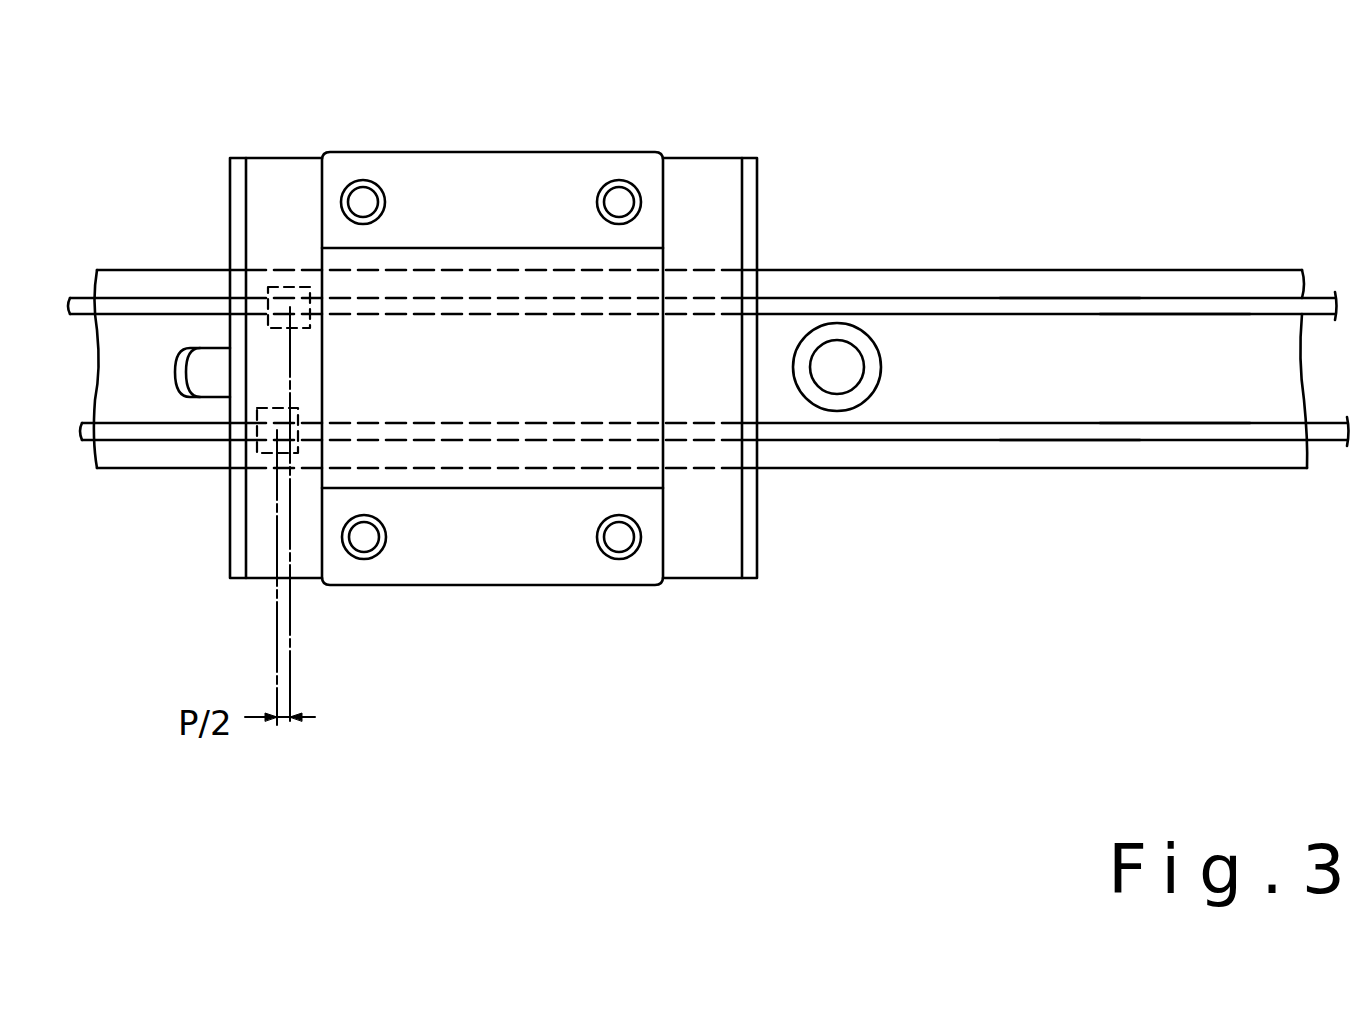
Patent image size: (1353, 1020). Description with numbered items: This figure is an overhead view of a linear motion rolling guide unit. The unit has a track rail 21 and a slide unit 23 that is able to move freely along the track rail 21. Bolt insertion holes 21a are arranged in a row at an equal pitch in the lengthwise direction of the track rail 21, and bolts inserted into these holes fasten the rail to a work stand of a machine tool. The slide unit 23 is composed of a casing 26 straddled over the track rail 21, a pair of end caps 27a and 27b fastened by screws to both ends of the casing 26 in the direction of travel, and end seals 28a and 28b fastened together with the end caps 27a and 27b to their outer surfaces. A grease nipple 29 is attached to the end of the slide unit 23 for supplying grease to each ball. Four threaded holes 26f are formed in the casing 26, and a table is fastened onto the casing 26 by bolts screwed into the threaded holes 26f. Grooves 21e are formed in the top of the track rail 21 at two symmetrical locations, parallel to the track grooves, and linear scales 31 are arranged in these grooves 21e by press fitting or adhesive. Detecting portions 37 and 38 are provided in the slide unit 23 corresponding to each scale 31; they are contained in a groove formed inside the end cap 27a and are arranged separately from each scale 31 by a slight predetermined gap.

The track rail 21 is at (1265, 258).
The bolt insertion holes 21a is at (878, 370).
The grooves 21e is at (1078, 302).
The slide unit 23 is at (763, 195).
The casing 26 is at (548, 182).
The threaded holes 26f is at (363, 200).
The end cap 27a is at (288, 173).
The end cap 27b is at (710, 178).
The end seal 28a is at (233, 162).
The end seal 28b is at (752, 156).
The grease nipple 29 is at (203, 378).
The linear scales 31 is at (1155, 305).
The detecting portion 37 is at (282, 290).
The detecting portion 38 is at (298, 453).